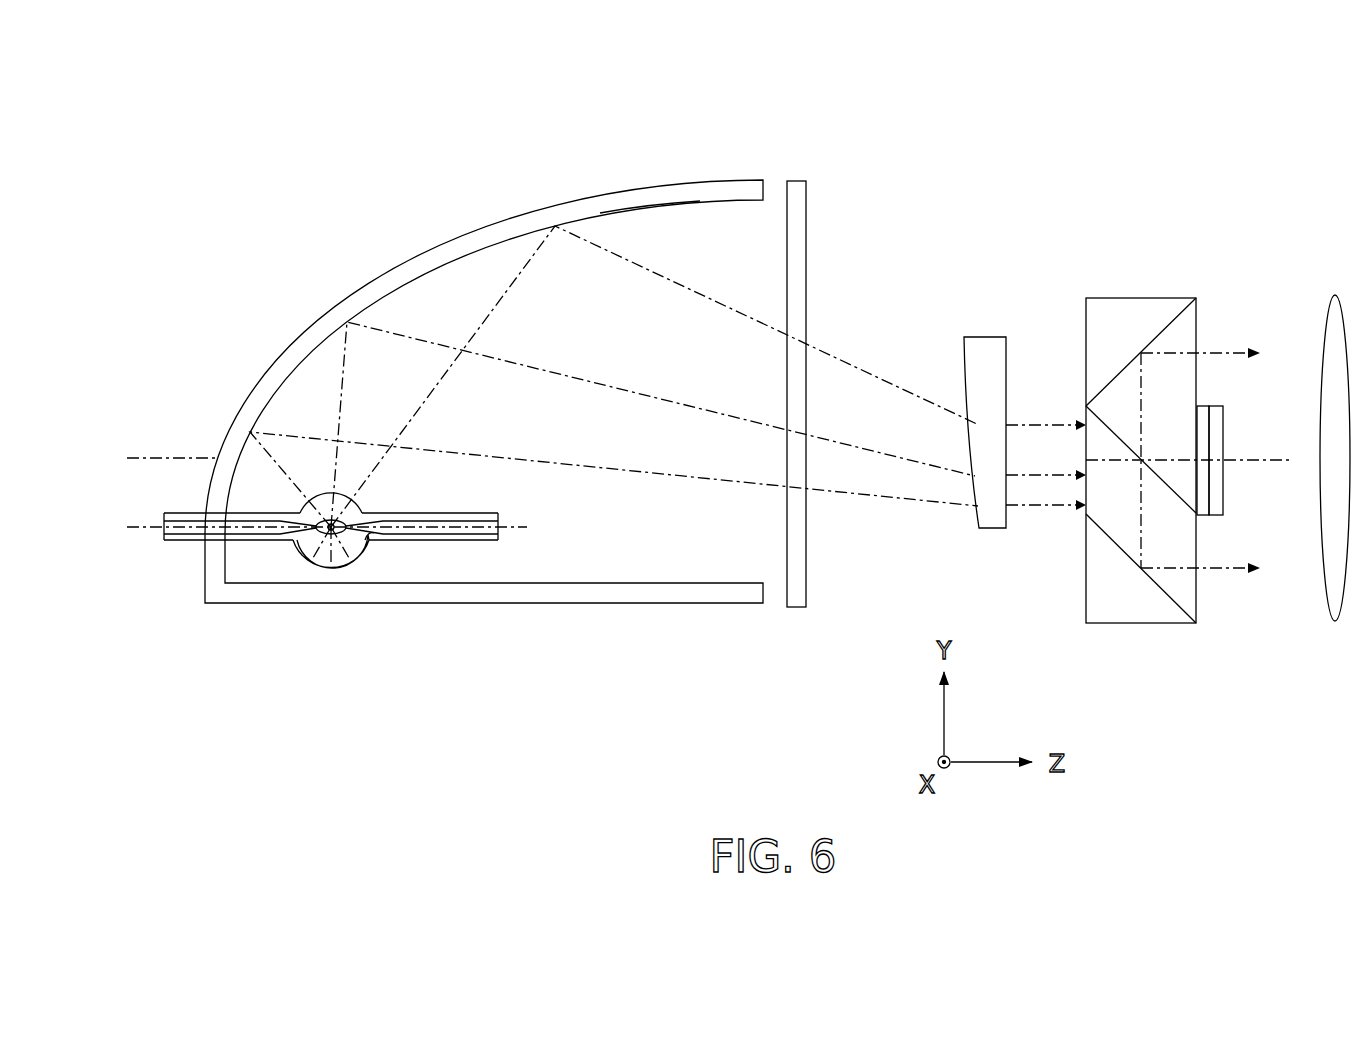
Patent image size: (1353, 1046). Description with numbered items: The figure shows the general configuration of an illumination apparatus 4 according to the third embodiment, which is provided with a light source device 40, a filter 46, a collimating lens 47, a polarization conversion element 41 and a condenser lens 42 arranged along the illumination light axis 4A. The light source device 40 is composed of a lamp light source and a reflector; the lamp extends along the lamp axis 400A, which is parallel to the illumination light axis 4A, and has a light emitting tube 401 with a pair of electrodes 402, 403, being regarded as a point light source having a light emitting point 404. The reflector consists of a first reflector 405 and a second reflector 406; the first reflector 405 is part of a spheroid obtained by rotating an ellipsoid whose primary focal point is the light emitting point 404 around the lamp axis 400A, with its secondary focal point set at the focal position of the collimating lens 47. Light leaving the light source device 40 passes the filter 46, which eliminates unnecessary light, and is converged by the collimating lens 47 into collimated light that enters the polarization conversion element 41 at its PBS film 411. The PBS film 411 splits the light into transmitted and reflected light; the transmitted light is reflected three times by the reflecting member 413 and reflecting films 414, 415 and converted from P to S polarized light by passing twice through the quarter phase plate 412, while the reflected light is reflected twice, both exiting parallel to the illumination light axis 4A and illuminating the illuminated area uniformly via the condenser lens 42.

The illumination apparatus 4 is at (1264, 163).
The illumination light axis 4A is at (181, 455).
The light source device 40 is at (289, 288).
The lamp axis 400A is at (141, 527).
The light emitting tube 401 is at (338, 553).
The electrode 402 is at (185, 530).
The electrode 403 is at (480, 536).
The light emitting point 404 is at (300, 549).
The first reflector 405 is at (633, 208).
The second reflector 406 is at (364, 540).
The filter 46 is at (797, 190).
The collimating lens 47 is at (990, 342).
The polarization conversion element 41 is at (1140, 272).
The PBS film 411 is at (1158, 486).
The quarter phase plate 412 is at (1205, 490).
The reflecting member 413 is at (1218, 427).
The reflecting film 414 is at (1175, 327).
The reflecting film 415 is at (1172, 594).
The condenser lens 42 is at (1336, 302).